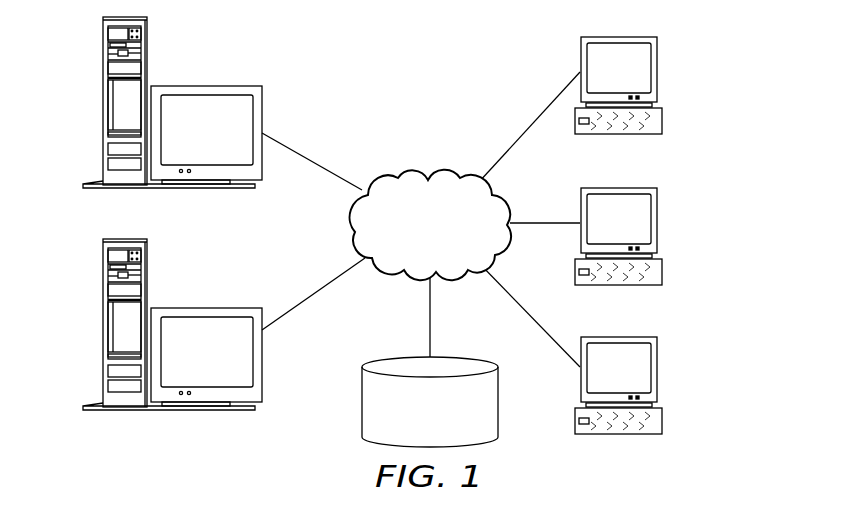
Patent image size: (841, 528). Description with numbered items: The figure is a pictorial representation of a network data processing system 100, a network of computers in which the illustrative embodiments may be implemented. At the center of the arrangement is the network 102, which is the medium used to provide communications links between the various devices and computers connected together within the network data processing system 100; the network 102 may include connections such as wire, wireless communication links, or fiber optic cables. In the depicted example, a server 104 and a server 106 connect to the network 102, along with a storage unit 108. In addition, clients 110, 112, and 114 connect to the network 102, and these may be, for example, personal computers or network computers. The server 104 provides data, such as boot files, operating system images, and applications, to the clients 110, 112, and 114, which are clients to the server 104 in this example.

The network data processing system 100 is at (484, 59).
The network 102 is at (401, 170).
The server 104 is at (103, 100).
The server 106 is at (103, 325).
The storage unit 108 is at (362, 410).
The client 110 is at (658, 68).
The client 112 is at (658, 220).
The client 114 is at (658, 372).